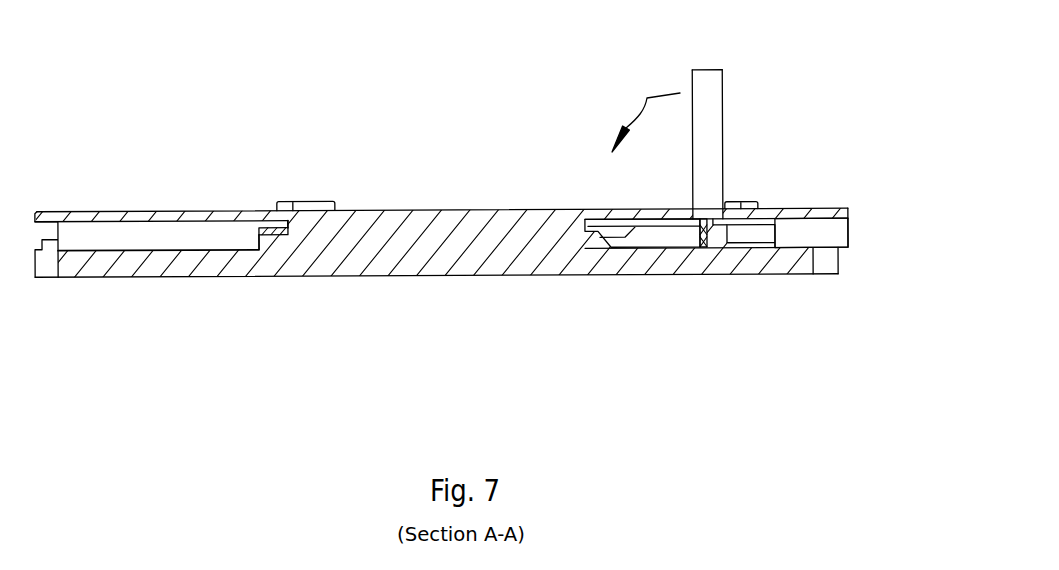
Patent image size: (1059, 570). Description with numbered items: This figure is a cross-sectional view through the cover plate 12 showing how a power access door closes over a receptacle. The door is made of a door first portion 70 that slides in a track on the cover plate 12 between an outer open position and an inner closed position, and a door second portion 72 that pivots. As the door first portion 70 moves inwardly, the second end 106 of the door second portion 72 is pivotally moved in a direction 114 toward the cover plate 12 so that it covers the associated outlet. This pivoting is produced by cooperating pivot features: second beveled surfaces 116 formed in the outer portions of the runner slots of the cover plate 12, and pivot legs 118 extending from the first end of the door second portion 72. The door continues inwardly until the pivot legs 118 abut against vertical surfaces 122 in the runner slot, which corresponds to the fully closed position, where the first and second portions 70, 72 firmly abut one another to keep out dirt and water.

The cover plate 12 is at (422, 210).
The door first portion 70 is at (836, 236).
The door second portion 72 is at (710, 133).
The second end 106 is at (710, 70).
The direction 114 is at (647, 98).
The second beveled surfaces 116 is at (600, 245).
The pivot legs 118 is at (709, 240).
The vertical surfaces 122 is at (602, 210).